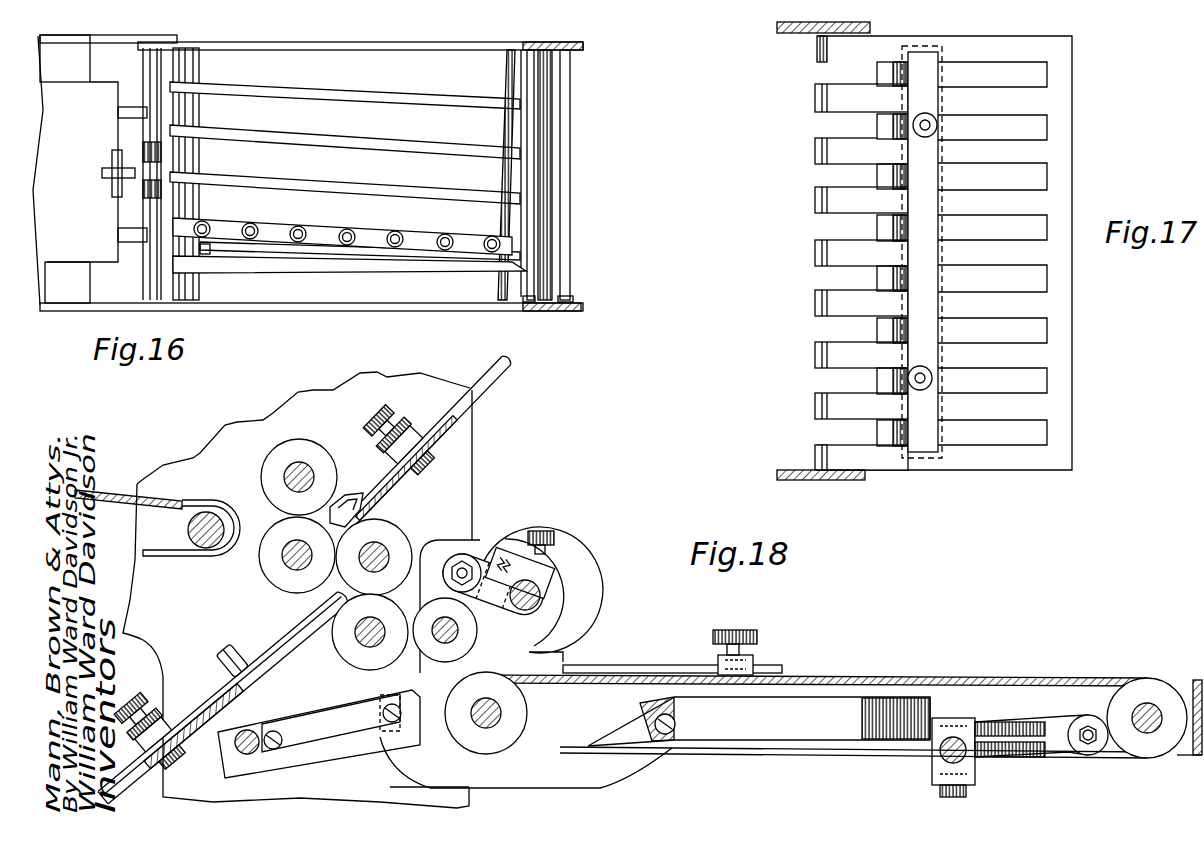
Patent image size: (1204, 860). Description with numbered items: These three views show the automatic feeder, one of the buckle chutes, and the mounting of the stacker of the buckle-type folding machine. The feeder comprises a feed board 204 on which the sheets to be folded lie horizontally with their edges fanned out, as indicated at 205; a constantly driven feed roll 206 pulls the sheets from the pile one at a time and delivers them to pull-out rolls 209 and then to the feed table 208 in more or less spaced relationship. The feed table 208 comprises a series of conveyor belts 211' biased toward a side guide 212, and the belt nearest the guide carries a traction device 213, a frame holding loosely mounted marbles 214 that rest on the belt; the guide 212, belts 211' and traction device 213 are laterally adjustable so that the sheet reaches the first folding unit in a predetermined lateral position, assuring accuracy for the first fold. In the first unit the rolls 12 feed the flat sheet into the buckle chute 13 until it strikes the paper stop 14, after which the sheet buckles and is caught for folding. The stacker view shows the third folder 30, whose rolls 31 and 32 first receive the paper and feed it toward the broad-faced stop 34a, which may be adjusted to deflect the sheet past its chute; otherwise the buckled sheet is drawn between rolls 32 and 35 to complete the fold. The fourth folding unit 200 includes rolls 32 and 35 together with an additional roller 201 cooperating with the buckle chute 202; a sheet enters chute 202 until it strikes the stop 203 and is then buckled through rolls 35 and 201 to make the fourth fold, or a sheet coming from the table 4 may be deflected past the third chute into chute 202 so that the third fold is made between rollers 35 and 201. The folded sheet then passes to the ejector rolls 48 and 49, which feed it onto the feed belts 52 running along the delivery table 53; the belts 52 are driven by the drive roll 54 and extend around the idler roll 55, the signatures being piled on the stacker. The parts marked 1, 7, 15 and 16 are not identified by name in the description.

In FIG. 16, the frame plate 1 is at (489, 42).
In FIG. 17, the frame plate 1 is at (790, 34).
In FIG. 18, the frame plate 1 is at (468, 450).
In FIG. 18, the table 4 is at (105, 485).
In FIG. 18, the lower bar assembly 7 is at (807, 632).
In FIG. 16, the roll 12 is at (535, 90).
In FIG. 17, the buckle chute 13 is at (958, 474).
In FIG. 17, the paper stop 14 is at (876, 380).
In FIG. 16, the hatched member 15 is at (557, 130).
In FIG. 17, the bushing 16 is at (925, 138).
In FIG. 18, the folding unit 30 is at (452, 404).
In FIG. 18, the feeding and folding roll 31 is at (305, 445).
In FIG. 18, the feeding and folding roll 32 is at (267, 568).
In FIG. 18, the stop 34a is at (383, 463).
In FIG. 18, the feeding and folding roll 35 is at (390, 533).
In FIG. 18, the ejector roll 48 is at (475, 553).
In FIG. 18, the ejector roll 49 is at (468, 637).
In FIG. 18, the feed belts 52 is at (1010, 678).
In FIG. 18, the delivery table 53 is at (900, 677).
In FIG. 18, the drive roll 54 is at (518, 713).
In FIG. 18, the idler roll 55 is at (1148, 695).
In FIG. 18, the folding unit 200 is at (187, 693).
In FIG. 18, the roller 201 is at (352, 658).
In FIG. 18, the buckle chute 202 is at (122, 790).
In FIG. 18, the stop 203 is at (260, 643).
In FIG. 16, the feed board 204 is at (63, 297).
In FIG. 16, the fanned-out sheet edges 205 is at (100, 97).
In FIG. 16, the feed roll 206 is at (108, 168).
In FIG. 16, the feed table 208 is at (346, 70).
In FIG. 16, the pull out roll 209 is at (163, 193).
In FIG. 16, the conveyor belts 211' is at (285, 198).
In FIG. 16, the side guide 212 is at (388, 267).
In FIG. 16, the traction device 213 is at (380, 234).
In FIG. 16, the marbles 214 is at (207, 228).